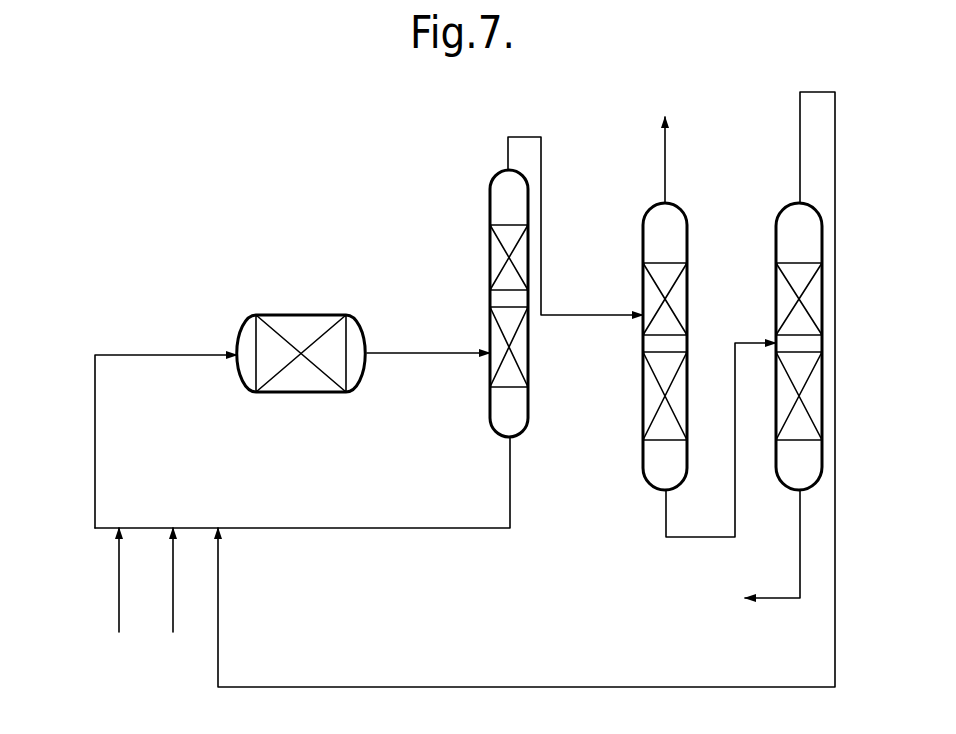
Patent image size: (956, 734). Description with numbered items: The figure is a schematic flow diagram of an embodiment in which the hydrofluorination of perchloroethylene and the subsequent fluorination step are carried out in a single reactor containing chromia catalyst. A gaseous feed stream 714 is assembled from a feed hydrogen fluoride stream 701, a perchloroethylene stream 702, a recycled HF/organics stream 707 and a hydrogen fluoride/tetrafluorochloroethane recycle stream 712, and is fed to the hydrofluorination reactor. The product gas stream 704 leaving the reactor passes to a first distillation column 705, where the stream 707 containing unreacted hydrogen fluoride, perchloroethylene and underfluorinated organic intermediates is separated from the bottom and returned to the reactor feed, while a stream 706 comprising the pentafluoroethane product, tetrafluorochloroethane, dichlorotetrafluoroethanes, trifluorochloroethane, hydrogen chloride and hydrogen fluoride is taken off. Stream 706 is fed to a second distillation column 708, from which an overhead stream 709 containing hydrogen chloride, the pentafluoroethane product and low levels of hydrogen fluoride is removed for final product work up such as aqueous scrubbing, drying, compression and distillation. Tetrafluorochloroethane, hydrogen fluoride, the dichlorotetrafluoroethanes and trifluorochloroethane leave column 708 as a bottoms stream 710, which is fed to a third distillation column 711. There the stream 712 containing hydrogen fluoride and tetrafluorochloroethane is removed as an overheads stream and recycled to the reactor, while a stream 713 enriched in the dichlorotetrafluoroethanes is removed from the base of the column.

The feed hydrogen fluoride stream 701 is at (118, 614).
The perchloroethylene stream 702 is at (172, 627).
The product gas stream 704 is at (433, 352).
The distillation column 705 is at (488, 270).
The stream comprising product HFA 125 706 is at (542, 181).
The recycled HF/organics stream 707 is at (508, 487).
The distillation column 708 is at (284, 315).
The overhead stream 709 is at (666, 155).
The bottoms stream 710 is at (697, 538).
The distillation column 711 is at (775, 233).
The hydrogen fluoride/tetrafluorochloroethane recycle stream 712 is at (836, 105).
The stream enriched in CFC 114/114a 713 is at (799, 570).
The gaseous feed stream 714 is at (93, 412).